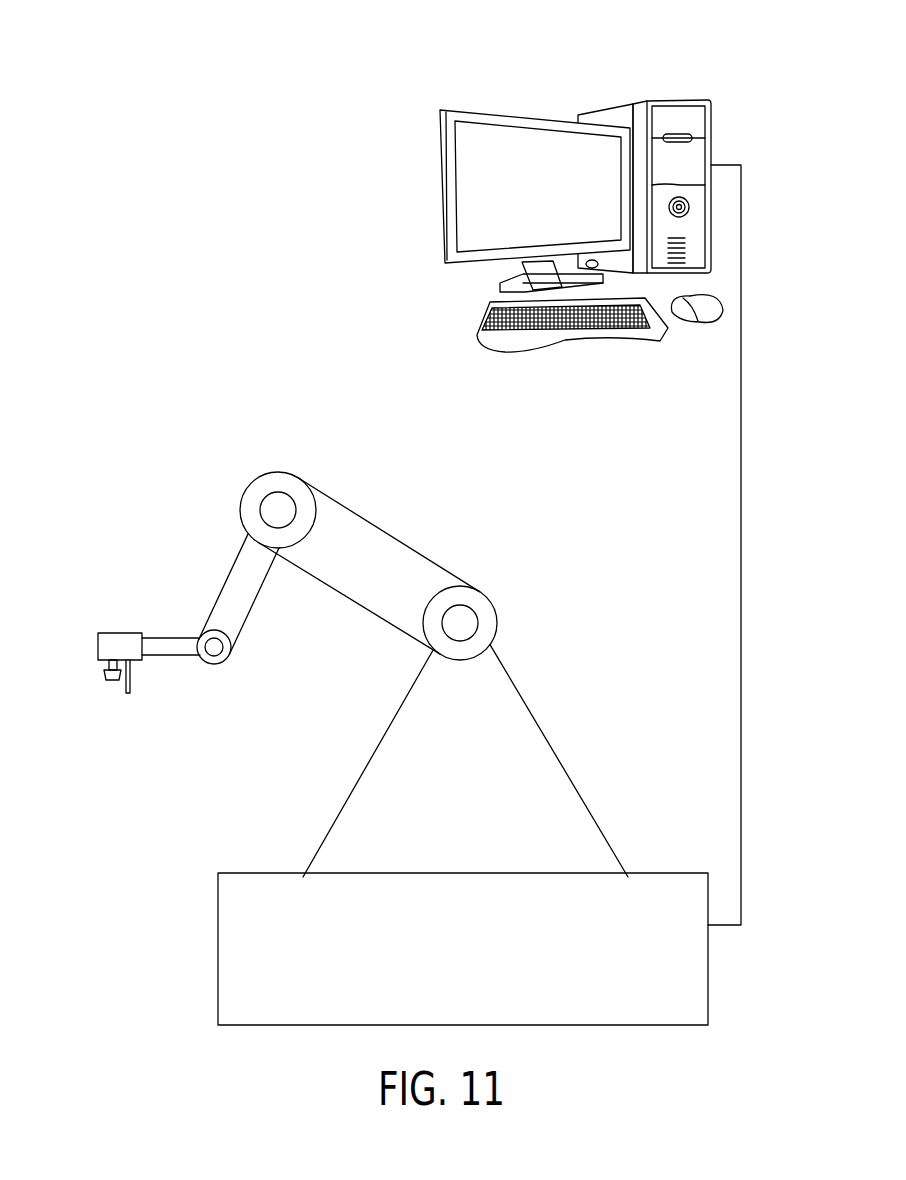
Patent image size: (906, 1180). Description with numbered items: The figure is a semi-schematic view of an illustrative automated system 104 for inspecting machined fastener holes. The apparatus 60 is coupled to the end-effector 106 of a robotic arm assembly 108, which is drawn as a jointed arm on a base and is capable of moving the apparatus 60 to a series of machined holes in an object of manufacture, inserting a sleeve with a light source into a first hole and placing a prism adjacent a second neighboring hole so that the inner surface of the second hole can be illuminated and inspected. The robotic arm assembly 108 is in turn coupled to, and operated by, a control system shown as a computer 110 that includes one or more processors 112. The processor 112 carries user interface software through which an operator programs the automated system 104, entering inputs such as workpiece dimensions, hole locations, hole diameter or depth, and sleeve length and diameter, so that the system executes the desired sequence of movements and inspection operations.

The automated system 104 is at (143, 188).
The computer 110 is at (524, 86).
The processor 112 is at (712, 145).
The robotic arm assembly 108 is at (266, 434).
The end-effector 106 is at (163, 658).
The apparatus 60 is at (98, 643).